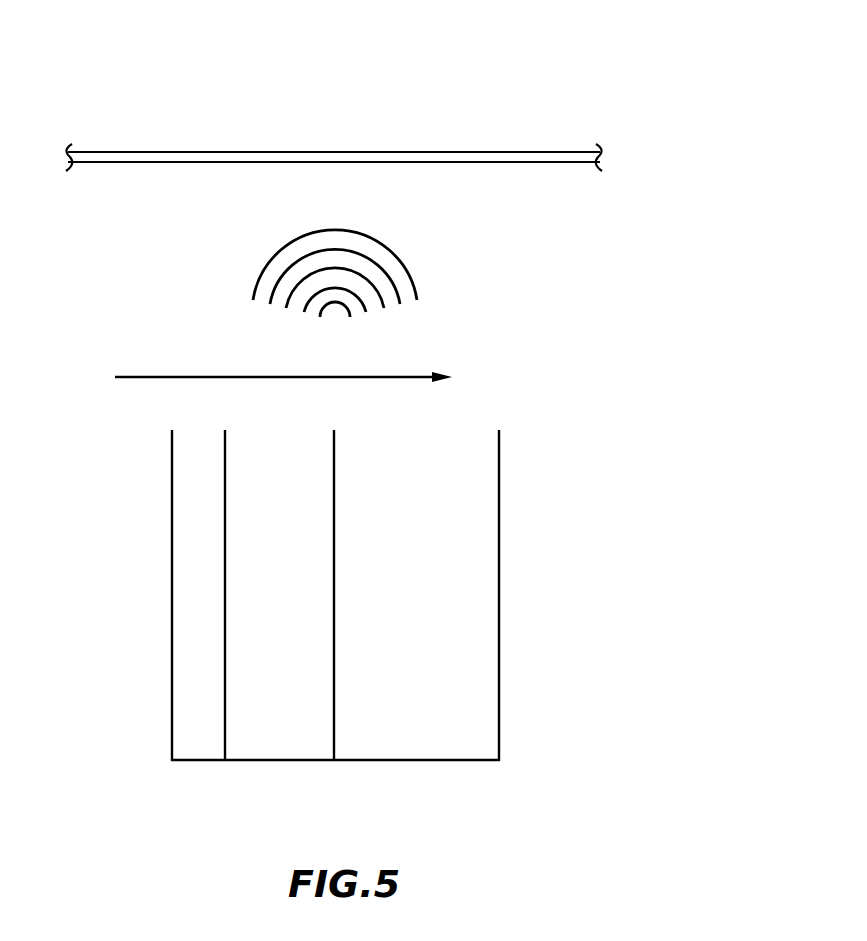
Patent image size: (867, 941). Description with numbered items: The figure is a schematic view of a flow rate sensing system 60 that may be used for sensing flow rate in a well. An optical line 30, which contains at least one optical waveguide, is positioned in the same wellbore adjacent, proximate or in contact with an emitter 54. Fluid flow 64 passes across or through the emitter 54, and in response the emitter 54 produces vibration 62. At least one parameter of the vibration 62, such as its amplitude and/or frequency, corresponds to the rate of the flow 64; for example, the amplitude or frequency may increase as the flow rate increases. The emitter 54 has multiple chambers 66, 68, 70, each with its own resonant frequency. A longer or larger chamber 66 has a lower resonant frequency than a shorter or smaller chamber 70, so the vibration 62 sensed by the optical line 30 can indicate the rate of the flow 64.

The flow rate sensing system 60 is at (702, 70).
The optical line 30 is at (218, 152).
The vibration 62 is at (400, 262).
The fluid flow 64 is at (197, 375).
The emitter 54 is at (170, 619).
The chamber 70 is at (200, 555).
The chamber 68 is at (283, 577).
The chamber 66 is at (427, 573).